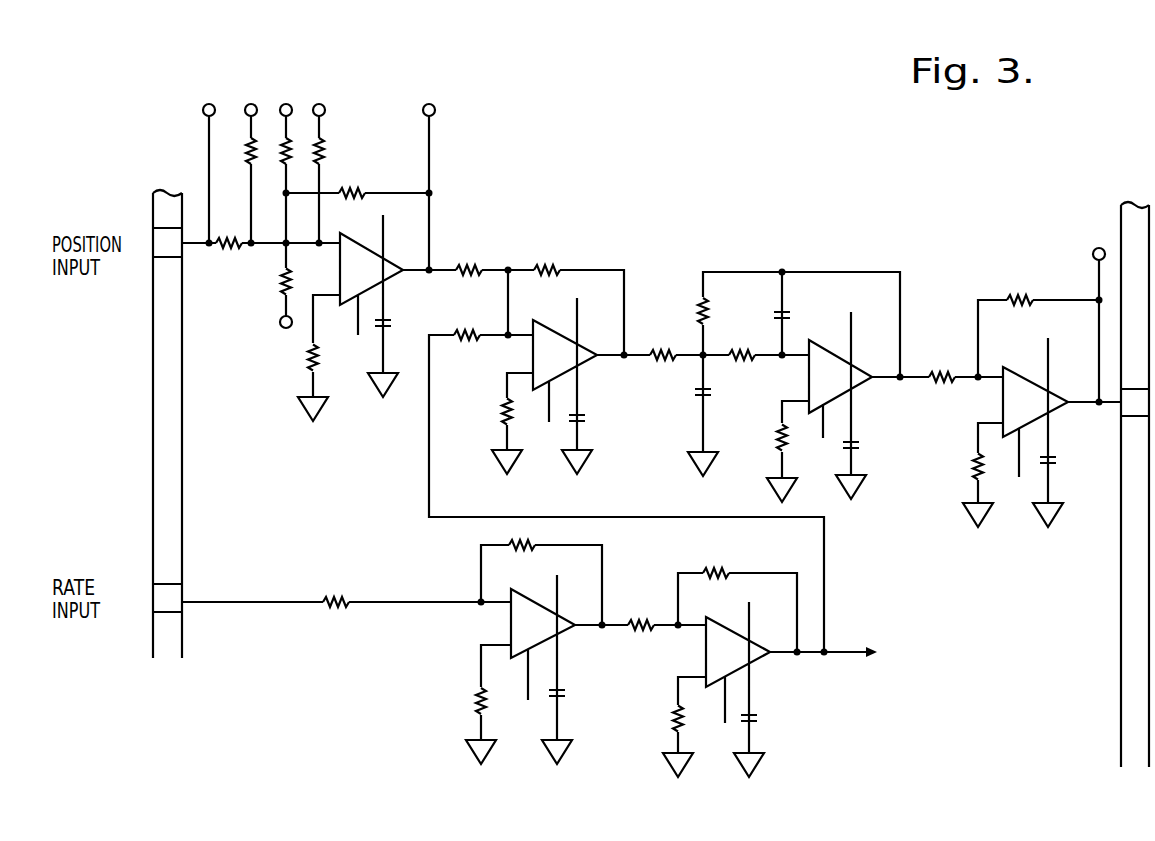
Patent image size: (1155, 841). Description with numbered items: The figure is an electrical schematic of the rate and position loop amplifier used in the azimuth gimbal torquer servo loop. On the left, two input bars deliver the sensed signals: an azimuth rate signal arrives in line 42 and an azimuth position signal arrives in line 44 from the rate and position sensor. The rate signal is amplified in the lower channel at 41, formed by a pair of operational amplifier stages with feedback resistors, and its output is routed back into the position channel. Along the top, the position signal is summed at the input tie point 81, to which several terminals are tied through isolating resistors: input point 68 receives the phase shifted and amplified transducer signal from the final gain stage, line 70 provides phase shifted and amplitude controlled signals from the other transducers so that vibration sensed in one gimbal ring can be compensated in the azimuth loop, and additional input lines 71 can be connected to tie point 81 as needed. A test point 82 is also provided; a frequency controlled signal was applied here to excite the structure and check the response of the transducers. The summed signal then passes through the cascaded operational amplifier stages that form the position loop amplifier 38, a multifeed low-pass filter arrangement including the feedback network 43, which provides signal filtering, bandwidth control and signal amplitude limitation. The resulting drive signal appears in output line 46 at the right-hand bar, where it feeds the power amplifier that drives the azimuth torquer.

The position loop amplifier 38 is at (758, 212).
The rate signal amplifier 41 is at (634, 677).
The rate input line 42 is at (222, 600).
The feedback resistor 43 is at (606, 263).
The position input line 44 is at (199, 246).
The output line 46 is at (1116, 408).
The input point 68 is at (282, 331).
The input line 70 is at (320, 104).
The additional input line 71 is at (252, 102).
The input tie point 81 is at (284, 246).
The test point 82 is at (287, 100).